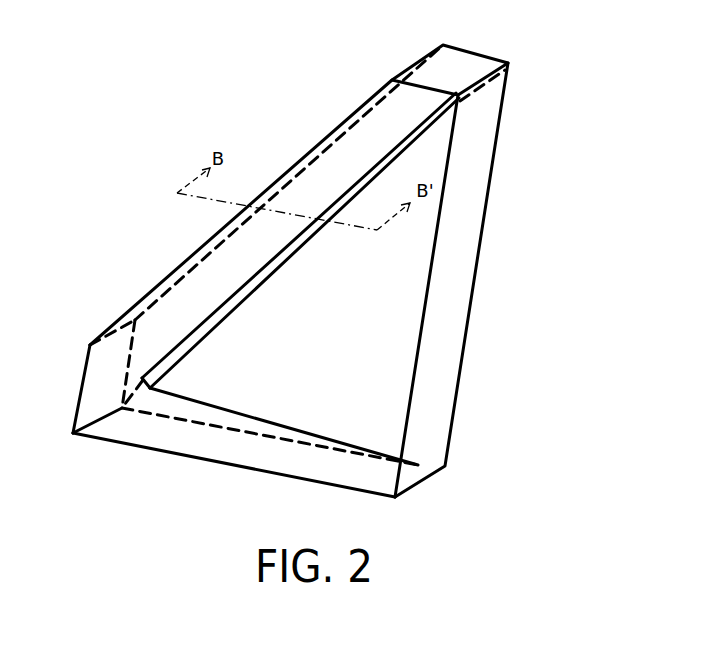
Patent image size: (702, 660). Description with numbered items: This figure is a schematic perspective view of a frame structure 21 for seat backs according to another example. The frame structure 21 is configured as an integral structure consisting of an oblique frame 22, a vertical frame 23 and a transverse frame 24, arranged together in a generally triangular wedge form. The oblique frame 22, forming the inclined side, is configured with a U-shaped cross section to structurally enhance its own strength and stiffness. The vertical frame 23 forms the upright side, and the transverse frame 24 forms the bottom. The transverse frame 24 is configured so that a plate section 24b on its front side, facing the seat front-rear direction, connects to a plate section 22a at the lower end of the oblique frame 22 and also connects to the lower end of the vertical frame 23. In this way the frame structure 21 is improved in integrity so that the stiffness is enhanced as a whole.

The frame structure 21 is at (287, 122).
The oblique frame 22 is at (178, 297).
The plate section 22a is at (260, 253).
The vertical frame 23 is at (462, 252).
The transverse frame 24 is at (256, 451).
The plate section 24b is at (175, 405).